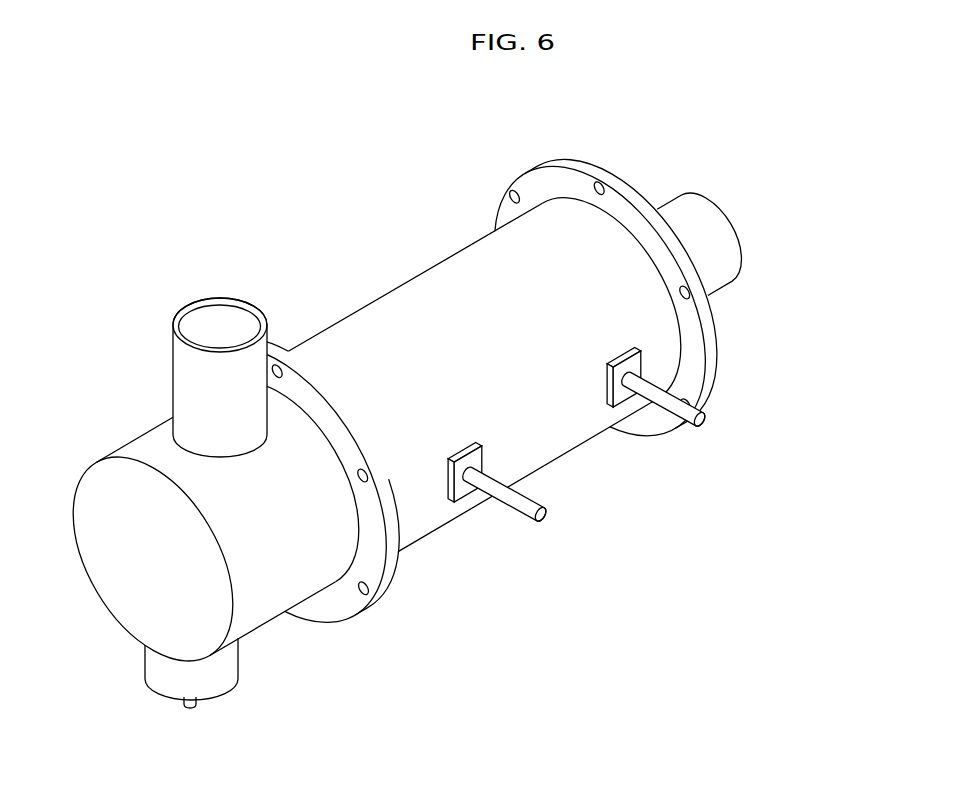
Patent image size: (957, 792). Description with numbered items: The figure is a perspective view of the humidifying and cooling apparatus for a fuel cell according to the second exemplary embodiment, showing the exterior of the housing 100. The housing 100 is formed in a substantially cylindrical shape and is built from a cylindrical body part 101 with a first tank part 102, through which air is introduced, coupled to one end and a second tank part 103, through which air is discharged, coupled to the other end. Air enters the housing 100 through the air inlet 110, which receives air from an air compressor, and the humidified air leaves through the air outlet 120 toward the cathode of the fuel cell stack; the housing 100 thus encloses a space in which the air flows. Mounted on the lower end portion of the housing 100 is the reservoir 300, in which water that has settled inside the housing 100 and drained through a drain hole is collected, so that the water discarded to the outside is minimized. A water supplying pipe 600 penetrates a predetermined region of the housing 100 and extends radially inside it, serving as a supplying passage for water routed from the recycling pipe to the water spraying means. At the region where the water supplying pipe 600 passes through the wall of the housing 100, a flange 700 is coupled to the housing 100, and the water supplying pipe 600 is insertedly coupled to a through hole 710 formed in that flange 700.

The housing 100 is at (627, 88).
The cylindrical body part 101 is at (400, 322).
The first tank part 102 is at (675, 213).
The second tank part 103 is at (298, 428).
The air inlet 110 is at (732, 212).
The air outlet 120 is at (192, 368).
The reservoir 300 is at (218, 670).
The water supplying pipe 600 is at (545, 508).
The flange 700 is at (577, 471).
The through hole 710 is at (470, 497).